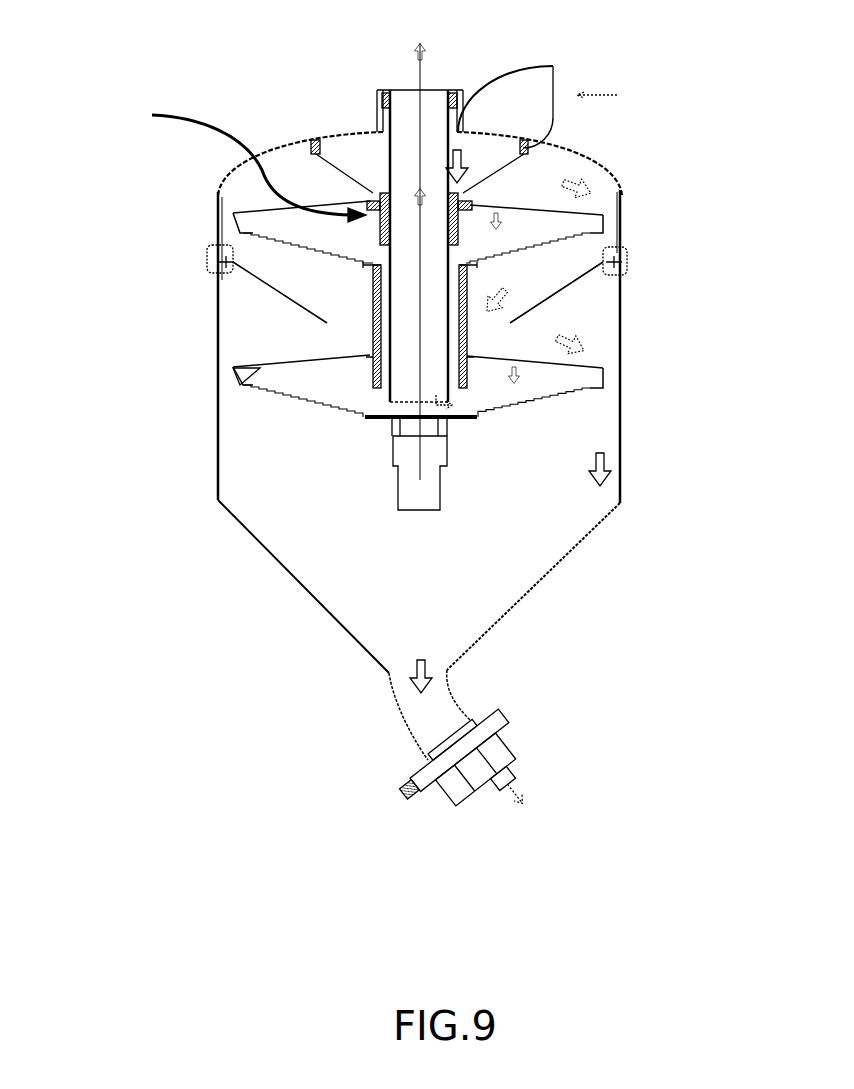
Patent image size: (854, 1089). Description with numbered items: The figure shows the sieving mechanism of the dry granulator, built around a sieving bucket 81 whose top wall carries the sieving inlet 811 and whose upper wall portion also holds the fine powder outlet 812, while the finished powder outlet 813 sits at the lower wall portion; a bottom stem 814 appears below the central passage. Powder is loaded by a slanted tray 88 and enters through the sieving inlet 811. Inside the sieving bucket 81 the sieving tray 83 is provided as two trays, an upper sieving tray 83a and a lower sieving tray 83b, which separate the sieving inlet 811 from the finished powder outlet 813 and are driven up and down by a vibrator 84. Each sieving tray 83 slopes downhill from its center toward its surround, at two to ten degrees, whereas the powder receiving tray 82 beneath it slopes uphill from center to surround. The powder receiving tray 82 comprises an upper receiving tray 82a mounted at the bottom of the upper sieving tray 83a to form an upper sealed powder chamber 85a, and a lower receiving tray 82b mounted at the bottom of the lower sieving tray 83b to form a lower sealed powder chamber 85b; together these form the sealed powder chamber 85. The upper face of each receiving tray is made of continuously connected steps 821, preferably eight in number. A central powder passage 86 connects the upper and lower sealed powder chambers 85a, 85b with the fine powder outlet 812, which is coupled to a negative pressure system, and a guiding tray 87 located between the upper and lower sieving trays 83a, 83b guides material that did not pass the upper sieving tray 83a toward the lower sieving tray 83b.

The sieving bucket 81 is at (520, 600).
The sieving inlet 811 is at (557, 115).
The fine powder outlet 812 is at (423, 90).
The finished powder outlet 813 is at (522, 803).
The bottom shaft 814 is at (413, 498).
The powder receiving tray 82 is at (326, 336).
The upper receiving tray 82a is at (238, 240).
The lower receiving tray 82b is at (268, 388).
The steps 821 is at (560, 240).
The sieving tray 83 is at (329, 268).
The upper sieving tray 83a is at (272, 208).
The lower sieving tray 83b is at (247, 383).
The vibrator 84 is at (228, 154).
The sealed powder chamber 85 is at (491, 195).
The upper sealed powder chamber 85a is at (533, 225).
The lower sealed powder chamber 85b is at (623, 262).
The powder passage 86 is at (383, 130).
The guiding tray 87 is at (263, 287).
The slanted tray 88 is at (346, 175).